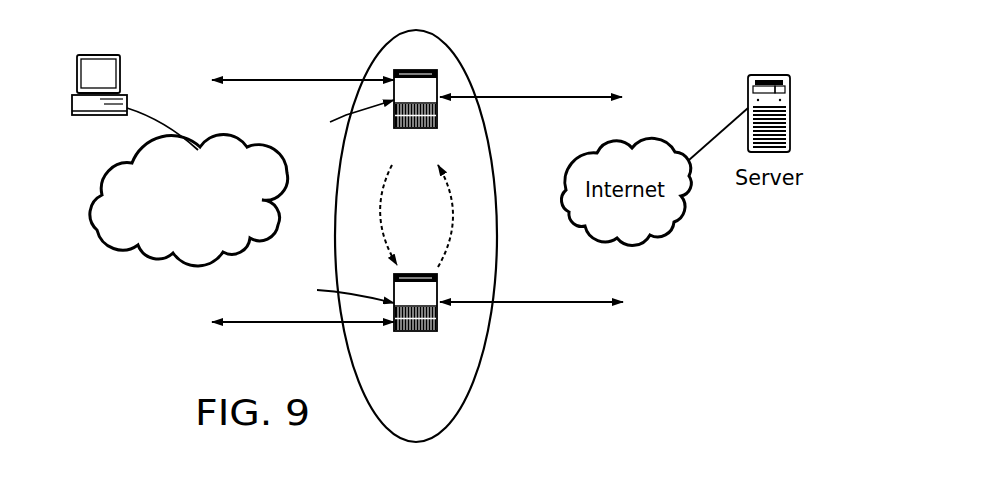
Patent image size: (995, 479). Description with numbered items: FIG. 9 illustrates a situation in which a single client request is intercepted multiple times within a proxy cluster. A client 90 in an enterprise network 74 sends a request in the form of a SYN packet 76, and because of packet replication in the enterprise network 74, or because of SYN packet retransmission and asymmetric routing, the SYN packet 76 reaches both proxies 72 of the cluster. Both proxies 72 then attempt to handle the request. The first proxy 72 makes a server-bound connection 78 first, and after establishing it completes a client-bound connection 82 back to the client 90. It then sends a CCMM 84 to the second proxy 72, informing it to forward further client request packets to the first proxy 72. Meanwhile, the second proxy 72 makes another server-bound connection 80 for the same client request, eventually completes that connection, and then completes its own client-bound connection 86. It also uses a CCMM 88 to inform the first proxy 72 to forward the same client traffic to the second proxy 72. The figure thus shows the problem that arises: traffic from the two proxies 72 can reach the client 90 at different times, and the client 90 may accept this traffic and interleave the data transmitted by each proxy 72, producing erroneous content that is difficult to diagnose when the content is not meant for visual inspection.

The proxy 72 is at (418, 222).
The enterprise network 74 is at (209, 250).
The SYN packet 76 is at (270, 147).
The server-bound connection 78 is at (531, 98).
The server-bound connection 80 is at (531, 304).
The client-bound connection 82 is at (303, 81).
The CCMM 84 is at (381, 215).
The client-bound connection 86 is at (303, 323).
The CCMM 88 is at (451, 216).
The client 90 is at (135, 102).